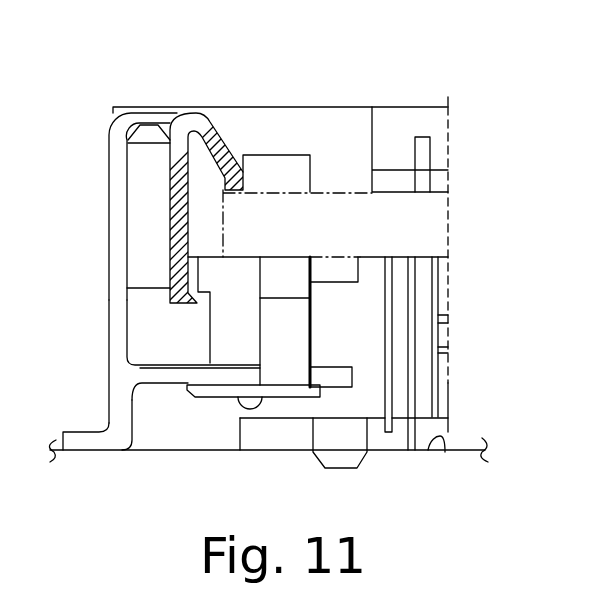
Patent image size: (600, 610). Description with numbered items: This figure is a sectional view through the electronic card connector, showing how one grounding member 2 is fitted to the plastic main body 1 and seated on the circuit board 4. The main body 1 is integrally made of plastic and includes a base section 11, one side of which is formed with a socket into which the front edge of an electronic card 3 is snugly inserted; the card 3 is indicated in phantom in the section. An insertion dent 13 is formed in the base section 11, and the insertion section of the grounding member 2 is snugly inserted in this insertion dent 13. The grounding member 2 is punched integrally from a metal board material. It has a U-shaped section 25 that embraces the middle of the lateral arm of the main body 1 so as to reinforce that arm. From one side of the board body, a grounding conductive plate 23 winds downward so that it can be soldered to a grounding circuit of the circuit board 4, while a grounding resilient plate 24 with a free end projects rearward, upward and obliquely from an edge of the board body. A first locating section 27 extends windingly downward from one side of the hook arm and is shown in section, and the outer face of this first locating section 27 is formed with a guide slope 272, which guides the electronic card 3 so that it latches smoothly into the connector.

The plastic main body 1 is at (322, 100).
The base section 11 is at (375, 112).
The electronic card 3 is at (410, 201).
The guide slope 272 is at (226, 130).
The first locating section 27 is at (176, 173).
The U-shaped section 25 is at (112, 228).
The grounding member 2 is at (104, 344).
The grounding conductive plate 23 is at (83, 442).
The grounding resilient plate 24 is at (288, 283).
The insertion dent 13 is at (210, 398).
The circuit board 4 is at (443, 447).